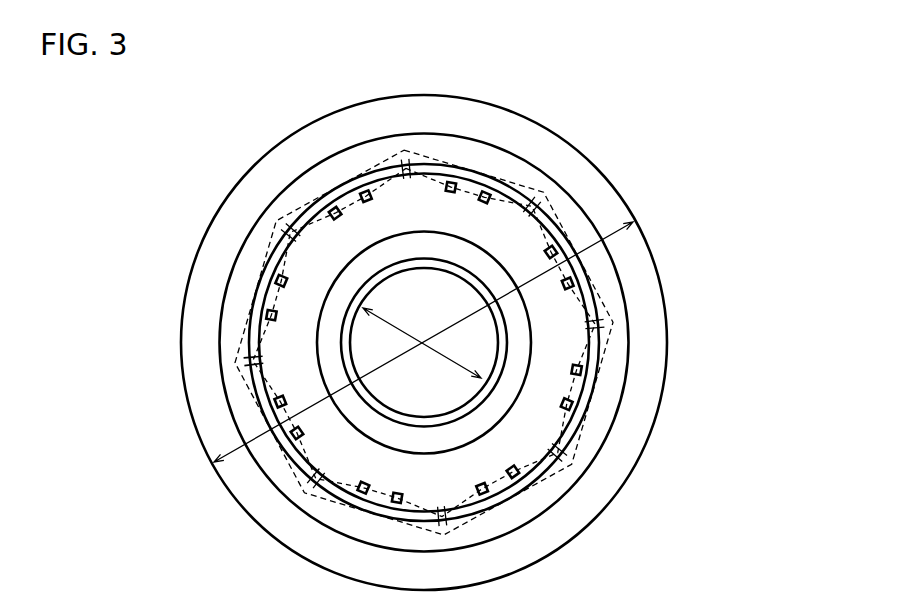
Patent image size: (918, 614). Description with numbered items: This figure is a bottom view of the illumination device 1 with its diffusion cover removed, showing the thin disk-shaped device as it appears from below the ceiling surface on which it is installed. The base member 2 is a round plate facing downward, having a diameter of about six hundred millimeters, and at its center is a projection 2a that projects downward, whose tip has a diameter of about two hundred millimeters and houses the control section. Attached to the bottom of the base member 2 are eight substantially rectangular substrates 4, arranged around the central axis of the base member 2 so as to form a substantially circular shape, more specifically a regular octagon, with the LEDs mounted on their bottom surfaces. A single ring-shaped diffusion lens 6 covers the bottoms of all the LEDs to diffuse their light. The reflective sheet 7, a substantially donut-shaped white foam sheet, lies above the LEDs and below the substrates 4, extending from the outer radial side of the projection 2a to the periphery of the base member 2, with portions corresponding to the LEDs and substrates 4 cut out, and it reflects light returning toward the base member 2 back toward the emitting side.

The illumination device 1 is at (744, 132).
The base member 2 is at (662, 381).
The projection 2a is at (480, 342).
The substrates 4 is at (272, 240).
The diffusion lens 6 is at (533, 209).
The reflective sheet 7 is at (248, 362).